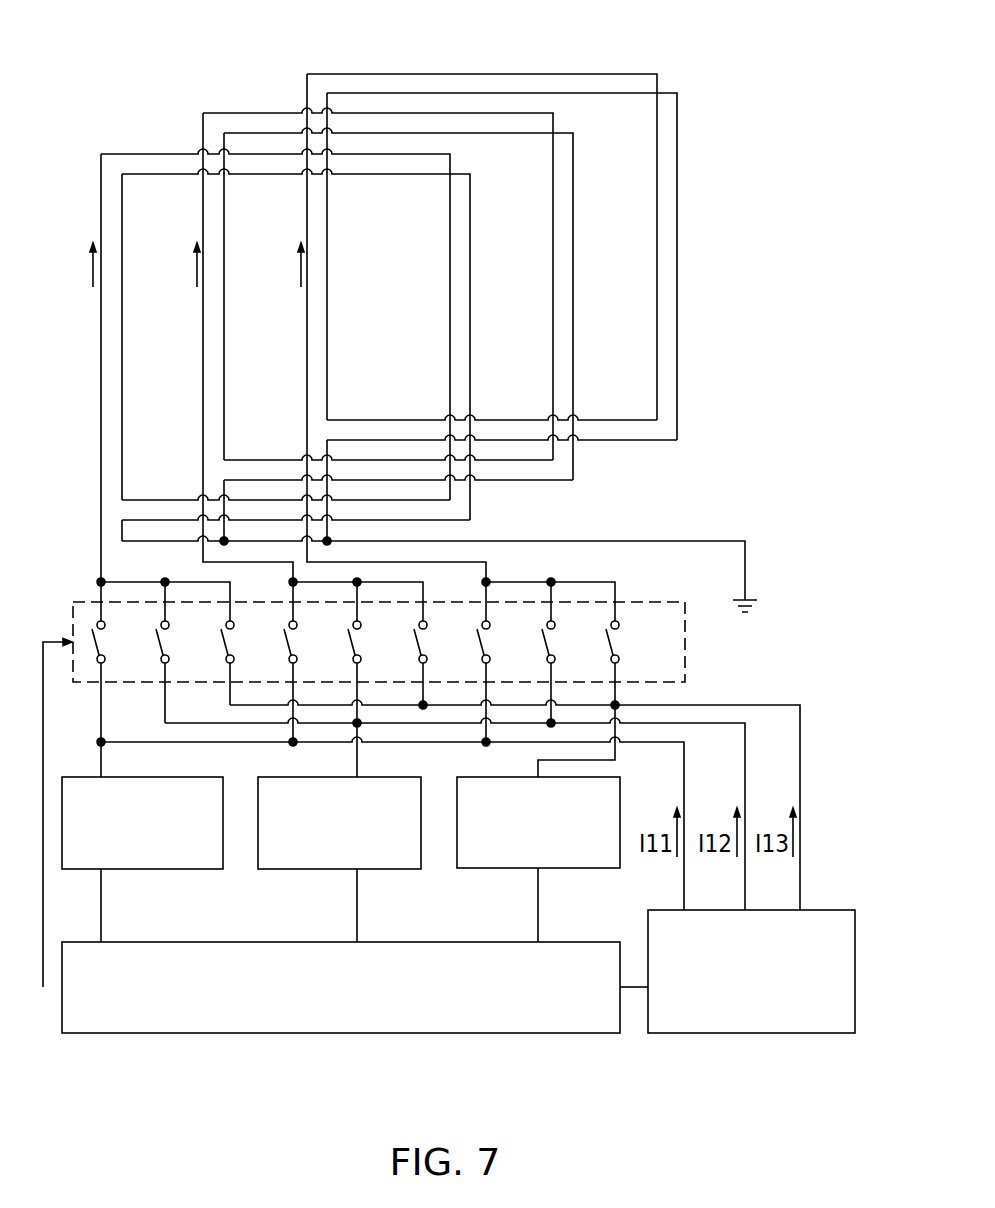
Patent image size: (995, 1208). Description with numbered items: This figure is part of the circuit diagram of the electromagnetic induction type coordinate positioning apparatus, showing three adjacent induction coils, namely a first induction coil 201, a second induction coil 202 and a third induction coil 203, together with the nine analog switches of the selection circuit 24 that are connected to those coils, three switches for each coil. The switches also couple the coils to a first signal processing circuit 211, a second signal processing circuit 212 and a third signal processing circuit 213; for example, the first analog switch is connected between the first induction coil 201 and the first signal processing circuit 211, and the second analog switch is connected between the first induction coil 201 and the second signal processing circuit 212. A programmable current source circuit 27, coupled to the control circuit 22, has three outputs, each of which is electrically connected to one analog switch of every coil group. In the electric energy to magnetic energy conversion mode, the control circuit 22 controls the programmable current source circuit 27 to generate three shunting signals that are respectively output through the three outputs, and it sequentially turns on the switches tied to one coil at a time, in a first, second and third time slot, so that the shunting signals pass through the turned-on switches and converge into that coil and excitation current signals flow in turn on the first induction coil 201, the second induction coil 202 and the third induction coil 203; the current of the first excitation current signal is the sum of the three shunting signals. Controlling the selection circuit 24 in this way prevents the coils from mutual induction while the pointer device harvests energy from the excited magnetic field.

The first induction coil 201 is at (155, 152).
The second induction coil 202 is at (252, 112).
The third induction coil 203 is at (354, 72).
The selection circuit 24 is at (686, 636).
The first signal processing circuit 211 is at (160, 869).
The second signal processing circuit 212 is at (386, 869).
The third signal processing circuit 213 is at (578, 868).
The control circuit 22 is at (338, 1033).
The programmable current source circuit 27 is at (745, 1033).